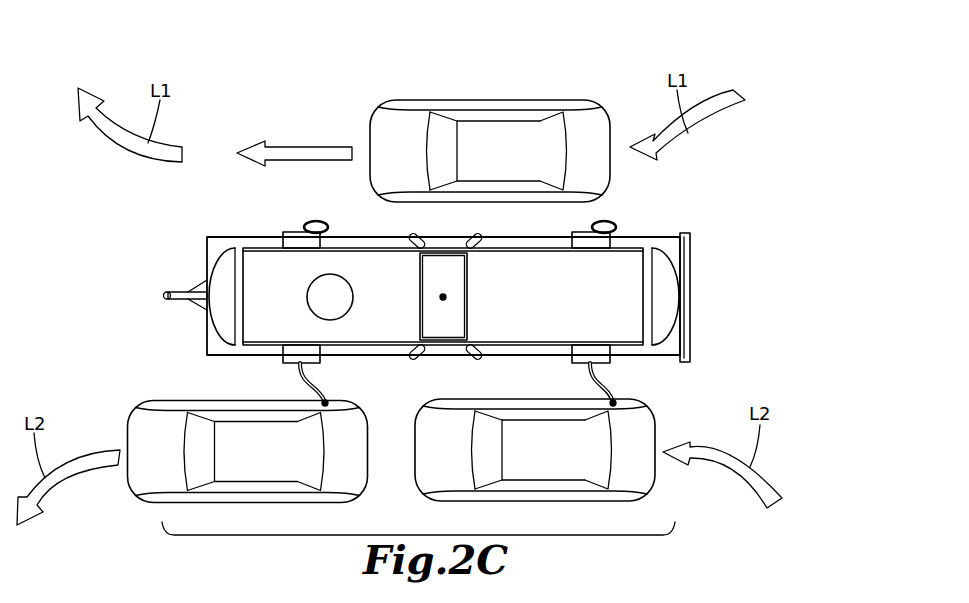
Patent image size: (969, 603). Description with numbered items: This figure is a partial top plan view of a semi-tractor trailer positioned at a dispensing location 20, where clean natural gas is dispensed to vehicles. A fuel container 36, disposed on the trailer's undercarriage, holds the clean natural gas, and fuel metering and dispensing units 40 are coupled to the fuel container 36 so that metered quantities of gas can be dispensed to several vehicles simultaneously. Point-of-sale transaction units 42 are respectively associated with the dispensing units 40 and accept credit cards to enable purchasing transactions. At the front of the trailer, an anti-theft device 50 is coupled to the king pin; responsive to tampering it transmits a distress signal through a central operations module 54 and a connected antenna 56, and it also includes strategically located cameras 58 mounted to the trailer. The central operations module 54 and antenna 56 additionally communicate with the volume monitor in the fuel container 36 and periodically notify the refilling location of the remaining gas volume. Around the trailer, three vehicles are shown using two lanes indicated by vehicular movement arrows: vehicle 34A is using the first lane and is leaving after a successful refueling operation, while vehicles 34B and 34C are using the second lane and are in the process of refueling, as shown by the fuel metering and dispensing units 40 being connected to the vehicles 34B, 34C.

The dispensing location 20 is at (120, 267).
The vehicle 34A is at (470, 105).
The vehicle 34B is at (133, 436).
The vehicle 34C is at (655, 437).
The fuel container 36 is at (578, 306).
The fuel metering and dispensing units 40 is at (312, 222).
The point-of-sale transaction units 42 is at (284, 233).
The anti-theft device 50 is at (167, 292).
The central operations module 54 is at (468, 322).
The antenna 56 is at (444, 297).
The cameras 58 is at (412, 236).